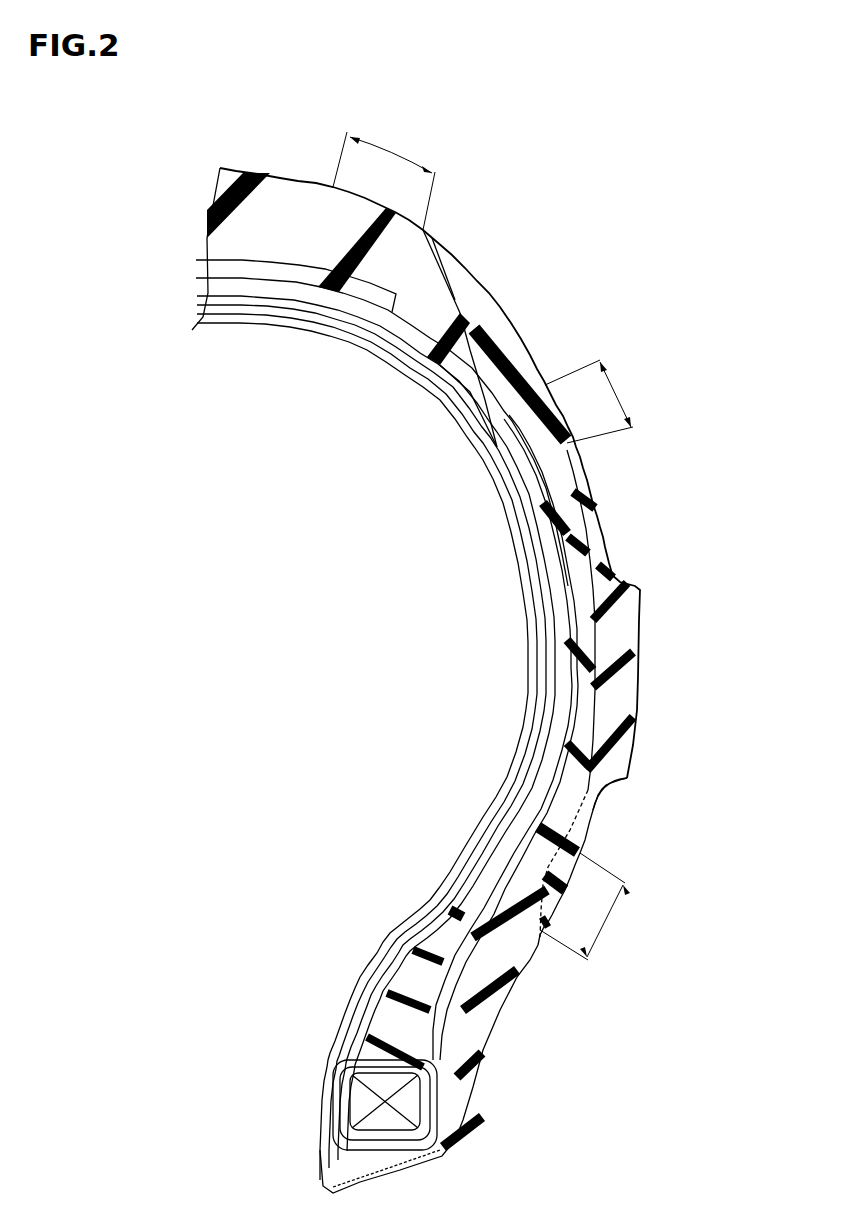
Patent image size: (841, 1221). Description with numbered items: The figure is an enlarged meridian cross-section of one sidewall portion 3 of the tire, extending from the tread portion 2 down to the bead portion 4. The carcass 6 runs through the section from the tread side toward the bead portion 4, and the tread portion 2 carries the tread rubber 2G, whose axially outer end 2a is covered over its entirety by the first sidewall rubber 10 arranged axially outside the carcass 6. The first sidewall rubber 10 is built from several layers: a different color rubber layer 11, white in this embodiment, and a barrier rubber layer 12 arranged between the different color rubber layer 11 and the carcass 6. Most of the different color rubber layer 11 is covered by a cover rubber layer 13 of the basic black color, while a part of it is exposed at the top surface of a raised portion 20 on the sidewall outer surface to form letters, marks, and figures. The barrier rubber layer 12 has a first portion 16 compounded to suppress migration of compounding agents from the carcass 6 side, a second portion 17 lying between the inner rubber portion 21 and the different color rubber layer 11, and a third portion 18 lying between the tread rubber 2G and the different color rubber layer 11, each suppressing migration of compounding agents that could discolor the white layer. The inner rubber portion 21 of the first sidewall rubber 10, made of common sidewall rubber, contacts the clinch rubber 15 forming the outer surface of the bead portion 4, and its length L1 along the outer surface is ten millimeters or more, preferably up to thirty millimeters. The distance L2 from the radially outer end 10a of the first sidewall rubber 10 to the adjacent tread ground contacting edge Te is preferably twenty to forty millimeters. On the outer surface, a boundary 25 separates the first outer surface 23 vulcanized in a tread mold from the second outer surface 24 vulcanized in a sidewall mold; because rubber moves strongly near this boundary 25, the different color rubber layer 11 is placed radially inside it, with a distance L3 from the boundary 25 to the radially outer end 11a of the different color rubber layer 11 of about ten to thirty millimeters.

The tread portion 2 is at (240, 165).
The tread ground contacting edge Te is at (333, 187).
The distance L2 is at (391, 146).
The tread rubber 2G is at (273, 238).
The carcass 6 is at (358, 330).
The outer end of the first sidewall rubber 10a is at (432, 230).
The third portion 18 is at (475, 307).
The first outer surface 23 is at (500, 308).
The boundary 25 is at (540, 380).
The distance L3 is at (598, 401).
The second outer surface 24 is at (565, 450).
The sidewall portion 3 is at (602, 517).
The cover rubber layer 13 is at (605, 545).
The different color rubber layer 11 is at (583, 522).
The barrier rubber layer 12 is at (553, 490).
The first sidewall rubber 10 is at (547, 468).
The first portion 16 is at (582, 622).
The outer end of the tread rubber 2a is at (540, 420).
The outer end of the different color rubber layer 11a is at (545, 445).
The raised portion 20 is at (645, 623).
The inner rubber portion 21 is at (558, 812).
The second portion 17 is at (557, 822).
The length L1 is at (595, 906).
The clinch rubber 15 is at (500, 990).
The bead portion 4 is at (496, 1073).